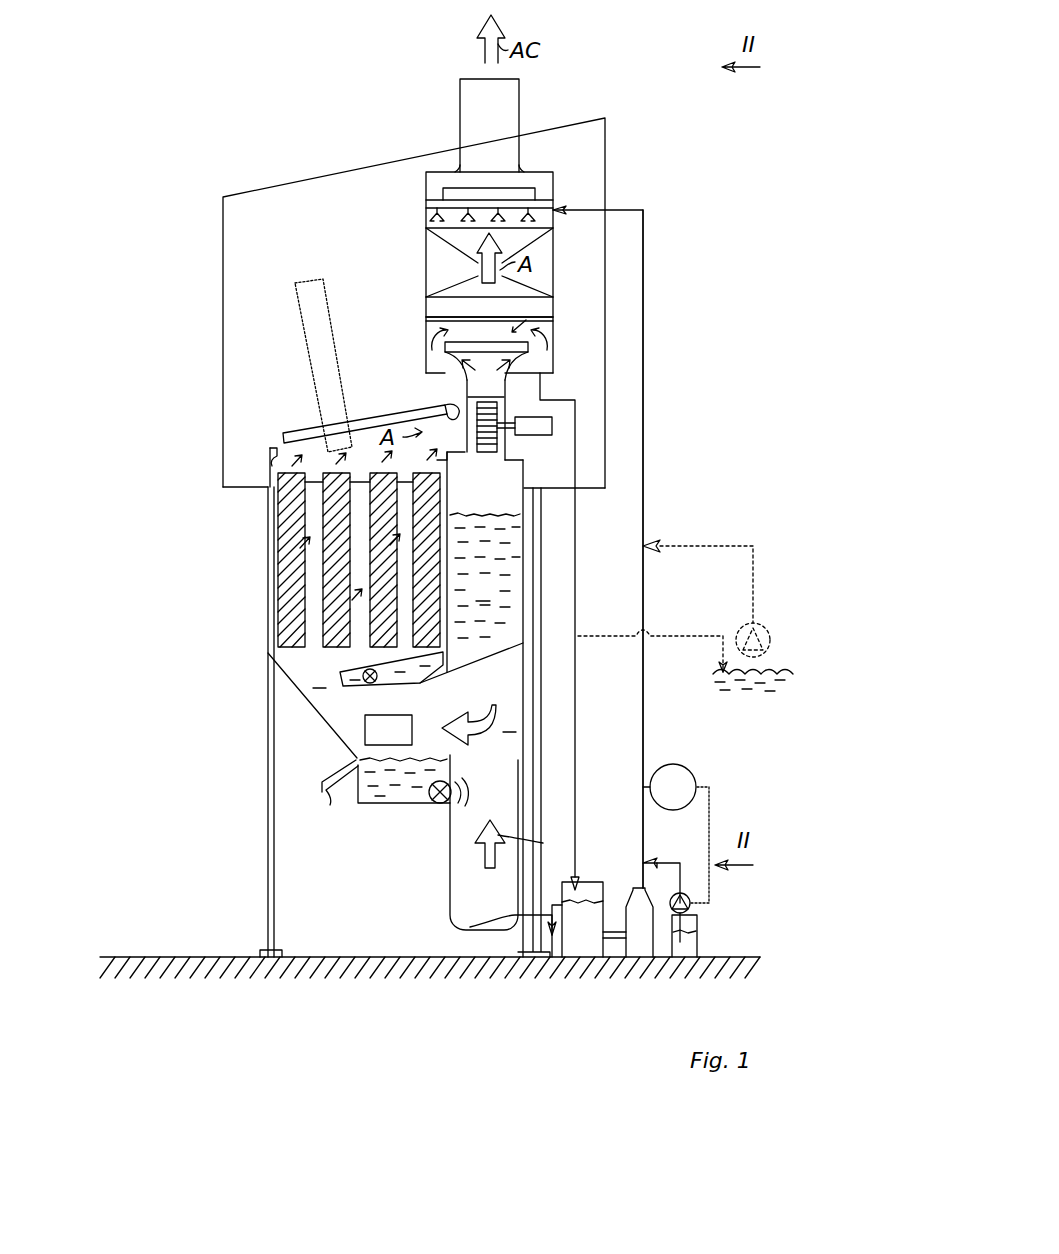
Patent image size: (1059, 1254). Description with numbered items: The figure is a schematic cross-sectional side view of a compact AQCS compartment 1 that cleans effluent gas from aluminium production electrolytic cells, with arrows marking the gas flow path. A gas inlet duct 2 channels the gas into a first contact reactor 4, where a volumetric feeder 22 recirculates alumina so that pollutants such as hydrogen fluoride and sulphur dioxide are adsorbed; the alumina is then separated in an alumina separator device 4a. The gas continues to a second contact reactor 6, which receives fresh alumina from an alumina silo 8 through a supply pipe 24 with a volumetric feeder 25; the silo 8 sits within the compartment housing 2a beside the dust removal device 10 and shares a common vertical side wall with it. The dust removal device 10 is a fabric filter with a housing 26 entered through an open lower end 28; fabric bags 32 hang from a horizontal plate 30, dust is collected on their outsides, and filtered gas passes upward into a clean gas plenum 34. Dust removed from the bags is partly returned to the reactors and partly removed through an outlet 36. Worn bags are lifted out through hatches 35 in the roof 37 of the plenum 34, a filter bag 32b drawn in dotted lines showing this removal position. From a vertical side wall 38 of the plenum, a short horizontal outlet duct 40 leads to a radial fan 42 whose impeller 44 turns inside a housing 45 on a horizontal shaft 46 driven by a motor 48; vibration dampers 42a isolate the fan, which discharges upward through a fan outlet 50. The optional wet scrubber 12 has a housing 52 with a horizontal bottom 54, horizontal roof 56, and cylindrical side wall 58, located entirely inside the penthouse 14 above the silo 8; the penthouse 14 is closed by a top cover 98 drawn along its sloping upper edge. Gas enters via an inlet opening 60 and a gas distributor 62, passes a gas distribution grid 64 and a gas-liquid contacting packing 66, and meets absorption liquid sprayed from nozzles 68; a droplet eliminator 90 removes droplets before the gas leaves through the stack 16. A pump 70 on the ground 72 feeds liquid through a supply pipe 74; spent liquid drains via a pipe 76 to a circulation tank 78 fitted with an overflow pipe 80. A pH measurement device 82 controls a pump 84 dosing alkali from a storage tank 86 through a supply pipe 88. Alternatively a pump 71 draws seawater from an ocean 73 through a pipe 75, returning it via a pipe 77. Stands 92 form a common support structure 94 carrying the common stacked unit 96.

The compact AQCS compartment 1 is at (236, 157).
The gas inlet duct 2 is at (450, 870).
The housing 2a is at (265, 598).
The first contact reactor 4 is at (479, 712).
The alumina separator device 4a is at (388, 730).
The second contact reactor 6 is at (320, 676).
The alumina silo 8 is at (455, 520).
The dust removal device 10 is at (262, 570).
The wet scrubber 12 is at (428, 163).
The gas cleaning unit penthouse 14 is at (340, 197).
The stack 16 is at (520, 100).
The volumetric feeder 22 is at (440, 805).
The supply pipe 24 is at (322, 712).
The volumetric feeder 25 is at (380, 680).
The housing 26 is at (265, 625).
The open lower end 28 is at (298, 663).
The horizontal plate 30 is at (318, 478).
The fabric bags 32 is at (268, 520).
The filter bag 32b is at (302, 320).
The clean gas plenum 34 is at (270, 458).
The hatches 35 is at (317, 430).
The outlet 36 is at (330, 795).
The roof 37 is at (275, 460).
The vertical side wall 38 is at (455, 405).
The horizontal outlet duct 40 is at (450, 413).
The radial fan 42 is at (517, 445).
The vibration dampers 42a is at (606, 487).
The impeller 44 is at (497, 428).
The housing 45 is at (470, 395).
The horizontal shaft 46 is at (503, 403).
The motor 48 is at (552, 427).
The fan outlet 50 is at (540, 387).
The housing 52 is at (565, 184).
The horizontal bottom 54 is at (445, 373).
The horizontal roof 56 is at (447, 172).
The cylindrical side wall 58 is at (553, 249).
The inlet opening 60 is at (457, 358).
The gas distributor 62 is at (522, 322).
The horizontal gas distribution grid 64 is at (448, 316).
The gas-liquid contacting packing 66 is at (545, 281).
The nozzles 68 is at (426, 213).
The pump 70 is at (657, 943).
The pump 71 is at (768, 632).
The ground 72 is at (205, 955).
The ocean 73 is at (783, 672).
The supply pipe 74 is at (645, 503).
The pipe 75 is at (712, 546).
The pipe 76 is at (578, 700).
The pipe 77 is at (680, 640).
The circulation tank 78 is at (590, 882).
The overflow pipe 80 is at (505, 920).
The pH measurement device 82 is at (685, 764).
The pump 84 is at (697, 904).
The storage tank 86 is at (698, 942).
The supply pipe 88 is at (665, 862).
The droplet eliminator 90 is at (532, 188).
The stands 92 is at (268, 855).
The common support structure 94 is at (265, 795).
The common stacked unit 96 is at (268, 500).
The top cover 98 is at (252, 193).